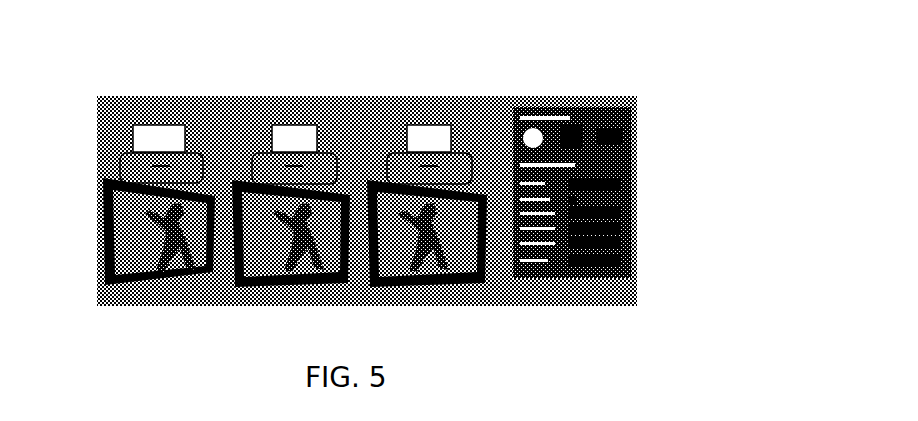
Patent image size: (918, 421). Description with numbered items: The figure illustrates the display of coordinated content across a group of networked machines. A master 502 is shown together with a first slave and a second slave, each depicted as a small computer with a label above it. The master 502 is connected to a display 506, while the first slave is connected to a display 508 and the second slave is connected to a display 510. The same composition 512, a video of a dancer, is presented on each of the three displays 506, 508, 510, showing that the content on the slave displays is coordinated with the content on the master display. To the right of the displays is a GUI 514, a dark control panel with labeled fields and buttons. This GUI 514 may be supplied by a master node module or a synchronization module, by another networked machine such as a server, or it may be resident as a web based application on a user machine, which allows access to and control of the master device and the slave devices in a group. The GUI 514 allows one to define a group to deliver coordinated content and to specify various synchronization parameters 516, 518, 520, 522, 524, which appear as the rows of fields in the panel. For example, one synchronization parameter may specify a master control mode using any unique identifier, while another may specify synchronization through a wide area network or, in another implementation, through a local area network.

The master 502 is at (197, 167).
The display 506 is at (128, 295).
The display 508 is at (303, 272).
The display 510 is at (427, 273).
The composition 512 is at (142, 250).
The GUI 514 is at (602, 107).
The synchronization parameter 516 is at (638, 178).
The synchronization parameter 518 is at (618, 200).
The synchronization parameter 520 is at (618, 210).
The synchronization parameter 522 is at (633, 248).
The synchronization parameter 524 is at (628, 232).